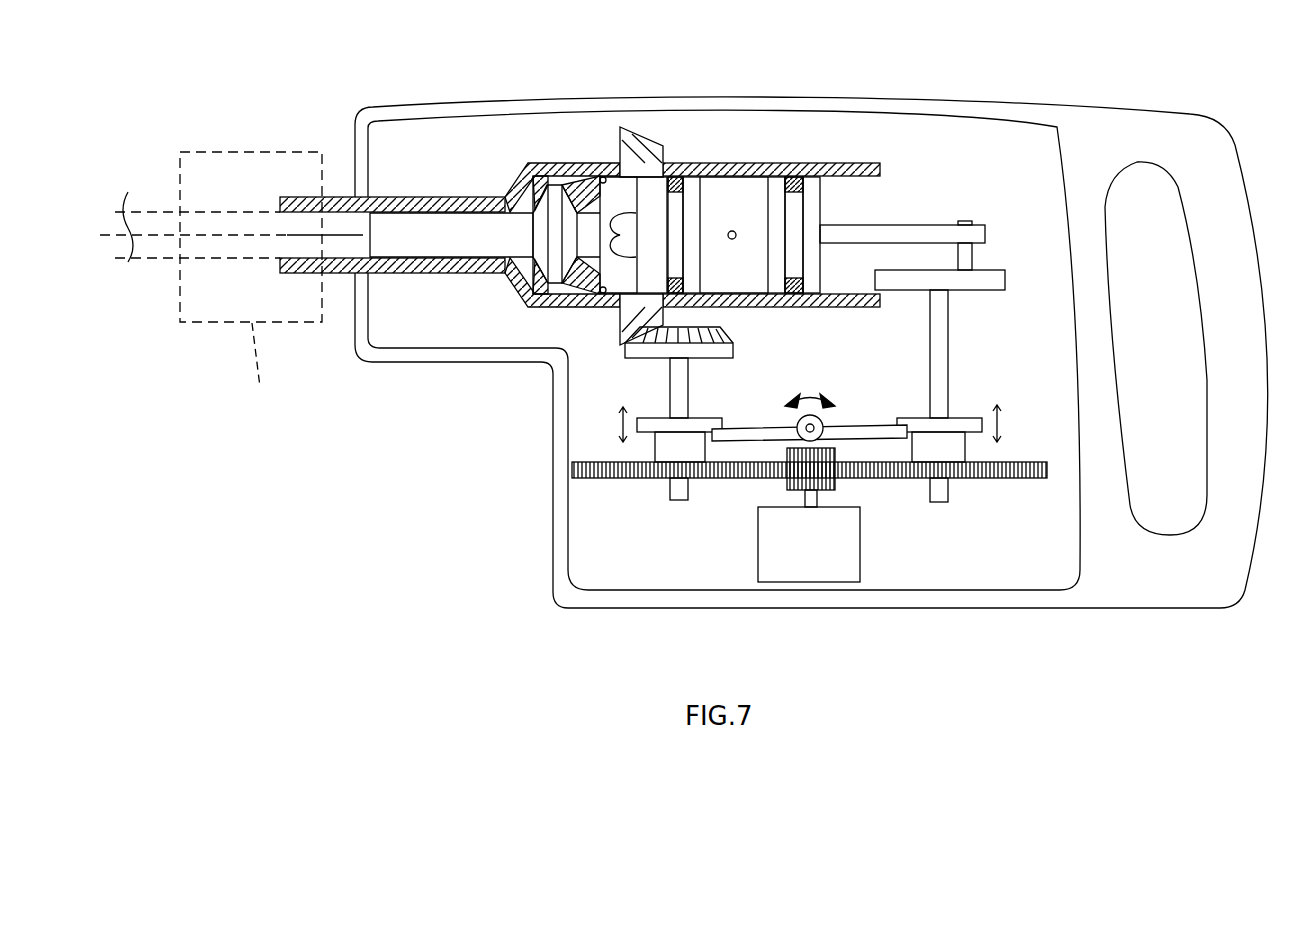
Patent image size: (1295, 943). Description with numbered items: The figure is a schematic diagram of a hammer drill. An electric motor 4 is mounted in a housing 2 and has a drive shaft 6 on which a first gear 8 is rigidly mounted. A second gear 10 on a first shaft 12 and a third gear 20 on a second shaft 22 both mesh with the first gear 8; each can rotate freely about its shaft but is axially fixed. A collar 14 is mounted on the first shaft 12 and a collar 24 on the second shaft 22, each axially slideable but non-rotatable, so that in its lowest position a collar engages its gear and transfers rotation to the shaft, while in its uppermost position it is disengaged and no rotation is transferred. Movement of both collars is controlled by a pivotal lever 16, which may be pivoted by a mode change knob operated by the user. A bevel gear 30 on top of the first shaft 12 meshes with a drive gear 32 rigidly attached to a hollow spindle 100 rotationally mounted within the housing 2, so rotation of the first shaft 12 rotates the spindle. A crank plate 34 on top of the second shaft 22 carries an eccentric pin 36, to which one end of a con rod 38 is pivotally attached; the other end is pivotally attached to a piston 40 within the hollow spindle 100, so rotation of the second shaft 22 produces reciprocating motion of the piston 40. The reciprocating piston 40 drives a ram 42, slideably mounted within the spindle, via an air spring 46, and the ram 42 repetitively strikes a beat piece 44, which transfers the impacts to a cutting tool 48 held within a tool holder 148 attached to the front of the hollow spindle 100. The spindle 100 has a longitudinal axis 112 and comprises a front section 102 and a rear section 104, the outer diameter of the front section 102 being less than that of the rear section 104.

The housing 2 is at (812, 108).
The electric motor 4 is at (806, 556).
The drive shaft 6 is at (822, 492).
The first gear 8 is at (788, 480).
The second gear 10 is at (615, 473).
The first shaft 12 is at (683, 385).
The collar 14 is at (668, 448).
The pivotal lever 16 is at (858, 430).
The third gear 20 is at (980, 473).
The second shaft 22 is at (938, 332).
The collar 24 is at (952, 447).
The bevel gear 30 is at (707, 348).
The drive gear 32 is at (645, 137).
The crank plate 34 is at (975, 280).
The eccentric pin 36 is at (967, 257).
The con rod 38 is at (917, 230).
The piston 40 is at (815, 212).
The ram 42 is at (692, 262).
The beat piece 44 is at (522, 233).
The air spring 46 is at (725, 216).
The cutting tool 48 is at (152, 262).
The hollow spindle 100 is at (455, 170).
The front section 102 is at (402, 207).
The rear section 104 is at (553, 170).
The longitudinal axis 112 is at (241, 233).
The tool holder 148 is at (275, 368).